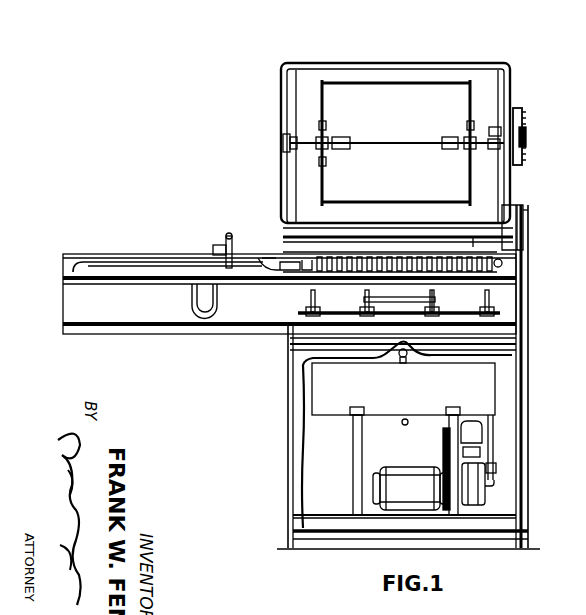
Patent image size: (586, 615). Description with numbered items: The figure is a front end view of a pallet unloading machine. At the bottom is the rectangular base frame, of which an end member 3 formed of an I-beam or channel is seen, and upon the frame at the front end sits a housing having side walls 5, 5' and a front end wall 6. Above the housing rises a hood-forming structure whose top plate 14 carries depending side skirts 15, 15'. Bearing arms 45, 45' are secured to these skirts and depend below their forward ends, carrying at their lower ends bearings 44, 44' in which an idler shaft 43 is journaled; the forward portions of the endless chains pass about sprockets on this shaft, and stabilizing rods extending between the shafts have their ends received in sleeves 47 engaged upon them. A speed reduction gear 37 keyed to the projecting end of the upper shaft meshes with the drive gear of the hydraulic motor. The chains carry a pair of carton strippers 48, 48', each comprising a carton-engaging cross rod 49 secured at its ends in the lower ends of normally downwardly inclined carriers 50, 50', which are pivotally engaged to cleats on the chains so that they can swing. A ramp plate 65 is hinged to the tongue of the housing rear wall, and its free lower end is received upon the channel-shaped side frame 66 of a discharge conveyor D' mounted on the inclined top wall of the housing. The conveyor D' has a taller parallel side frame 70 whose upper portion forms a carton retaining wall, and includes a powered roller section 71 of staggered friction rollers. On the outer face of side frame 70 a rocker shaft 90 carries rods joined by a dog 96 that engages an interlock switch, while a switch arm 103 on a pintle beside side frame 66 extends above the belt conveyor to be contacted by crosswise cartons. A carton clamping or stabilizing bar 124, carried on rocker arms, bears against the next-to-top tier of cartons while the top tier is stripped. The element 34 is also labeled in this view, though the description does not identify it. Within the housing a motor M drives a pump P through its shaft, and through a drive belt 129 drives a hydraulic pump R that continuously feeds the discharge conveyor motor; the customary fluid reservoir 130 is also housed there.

The end member 3 is at (500, 540).
The side wall 5 is at (385, 435).
The side wall 5' is at (536, 376).
The front end wall 6 is at (288, 418).
The top plate 14 is at (405, 63).
The side skirt 15 is at (525, 144).
The side skirt 15' is at (271, 146).
The table 34 is at (528, 266).
The speed reduction gear 37 is at (524, 124).
The idler shaft 43 is at (389, 142).
The bearing 44 is at (489, 156).
The bearing 44' is at (273, 160).
The bearing arm 45 is at (522, 112).
The bearing arm 45' is at (266, 139).
The sleeve 47 is at (339, 137).
The carton stripper 48 is at (343, 168).
The carton stripper 48' is at (348, 112).
The carton-engaging cross rod 49 is at (440, 83).
The carrier 50 is at (335, 166).
The carrier 50' is at (457, 155).
The ramp plate 65 is at (528, 217).
The side frame 66 is at (184, 254).
The side frame 70 is at (510, 307).
The powered roller section 71 is at (498, 262).
The rocker shaft 90 is at (440, 309).
The dog 96 is at (394, 299).
The switch arm 103 is at (234, 252).
The carton clamping or stabilizing bar 124 is at (505, 215).
The drive belt 129 is at (443, 447).
The fluid reservoir 130 is at (350, 410).
The discharge conveyor D' is at (275, 237).
The motor M is at (405, 500).
The pump P is at (495, 500).
The hydraulic pump R is at (480, 433).